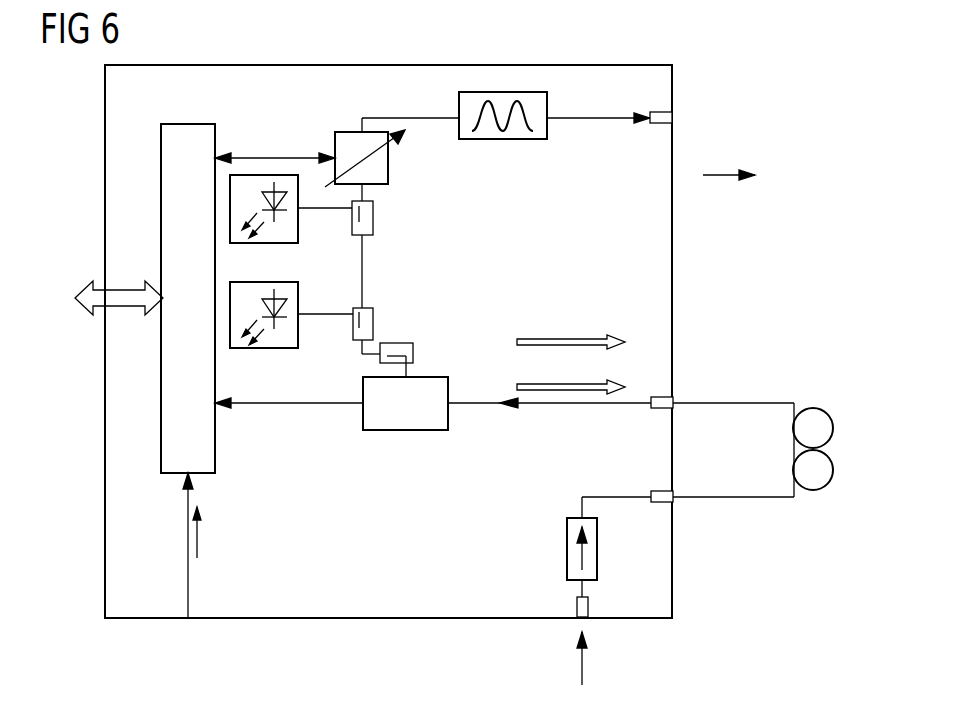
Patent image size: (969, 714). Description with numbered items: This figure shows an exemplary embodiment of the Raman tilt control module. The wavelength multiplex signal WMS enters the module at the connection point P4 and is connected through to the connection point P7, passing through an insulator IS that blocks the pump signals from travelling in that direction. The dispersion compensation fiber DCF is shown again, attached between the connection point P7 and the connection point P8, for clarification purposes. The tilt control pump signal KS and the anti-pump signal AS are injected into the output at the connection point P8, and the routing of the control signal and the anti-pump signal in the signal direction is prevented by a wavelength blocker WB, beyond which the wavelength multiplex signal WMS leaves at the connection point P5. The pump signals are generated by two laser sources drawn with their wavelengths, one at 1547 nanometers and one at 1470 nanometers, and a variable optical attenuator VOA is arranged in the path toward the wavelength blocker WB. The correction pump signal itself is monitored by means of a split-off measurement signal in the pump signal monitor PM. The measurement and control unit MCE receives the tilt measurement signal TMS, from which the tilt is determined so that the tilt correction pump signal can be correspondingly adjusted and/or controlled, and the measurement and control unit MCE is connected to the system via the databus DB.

The measurement and control unit MCE is at (188, 298).
The databus DB is at (101, 298).
The 1547 nm laser source 1547 is at (271, 224).
The 1470 nm laser source 1470 is at (271, 332).
The variable optical attenuator VOA is at (388, 165).
The wavelength blocker WB is at (505, 139).
The port P5 is at (672, 118).
The wavelength multiplex signal WMS is at (667, 415).
The pump signal monitor PM is at (405, 403).
The anti-pump signal AS is at (571, 329).
The tilt control pump signal KS is at (571, 373).
The connection point P8 is at (665, 397).
The dispersion compensation fiber DCF is at (835, 449).
The connection point P7 is at (651, 491).
The insulator IS is at (567, 549).
The connection point P4 is at (577, 608).
The tilt measurement signal TMS is at (215, 545).